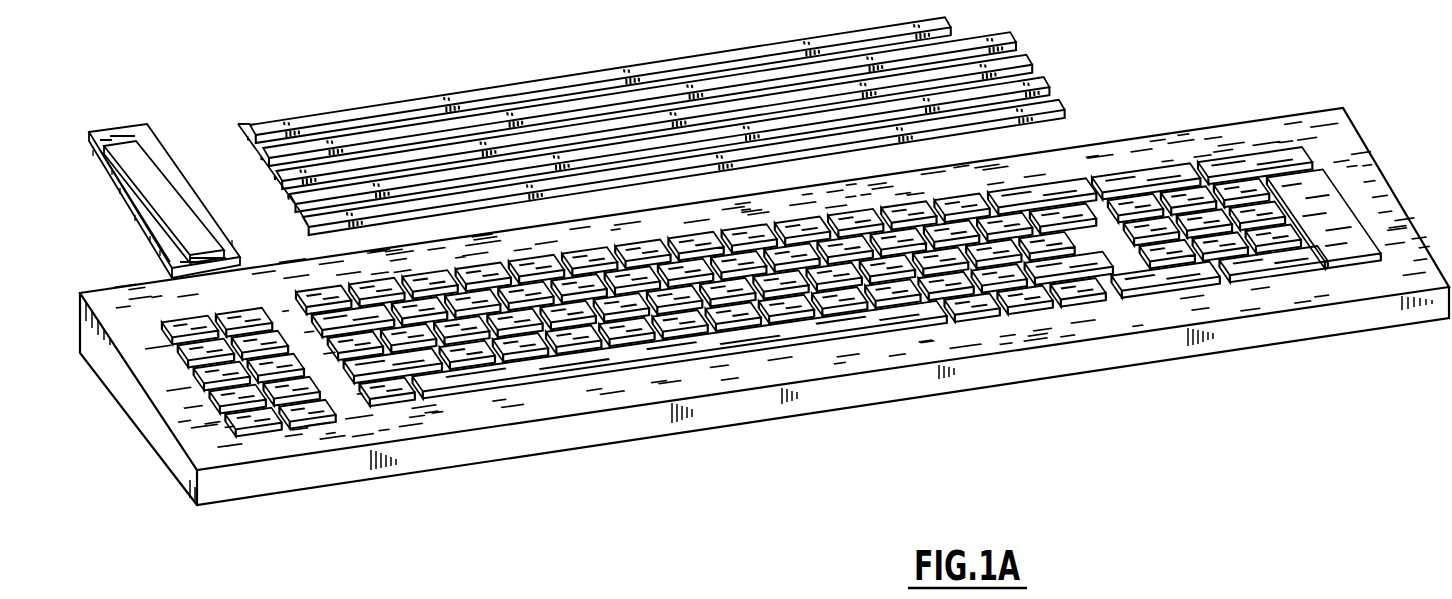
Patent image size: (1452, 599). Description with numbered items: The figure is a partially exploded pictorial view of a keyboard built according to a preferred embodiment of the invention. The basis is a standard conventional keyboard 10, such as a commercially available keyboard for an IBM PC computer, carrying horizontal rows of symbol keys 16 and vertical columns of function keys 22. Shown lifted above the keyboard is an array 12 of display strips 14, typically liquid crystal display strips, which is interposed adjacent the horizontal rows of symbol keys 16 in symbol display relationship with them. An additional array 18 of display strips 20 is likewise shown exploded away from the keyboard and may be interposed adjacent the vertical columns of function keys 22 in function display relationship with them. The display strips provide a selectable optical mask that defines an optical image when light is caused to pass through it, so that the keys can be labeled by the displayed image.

The keyboard 10 is at (1353, 88).
The array of display strips 12 is at (666, 120).
The display strips 14 is at (1034, 52).
The symbol keys 16 is at (997, 250).
The additional array of display strips 18 is at (161, 145).
The display strips 20 is at (138, 232).
The function keys 22 is at (263, 438).